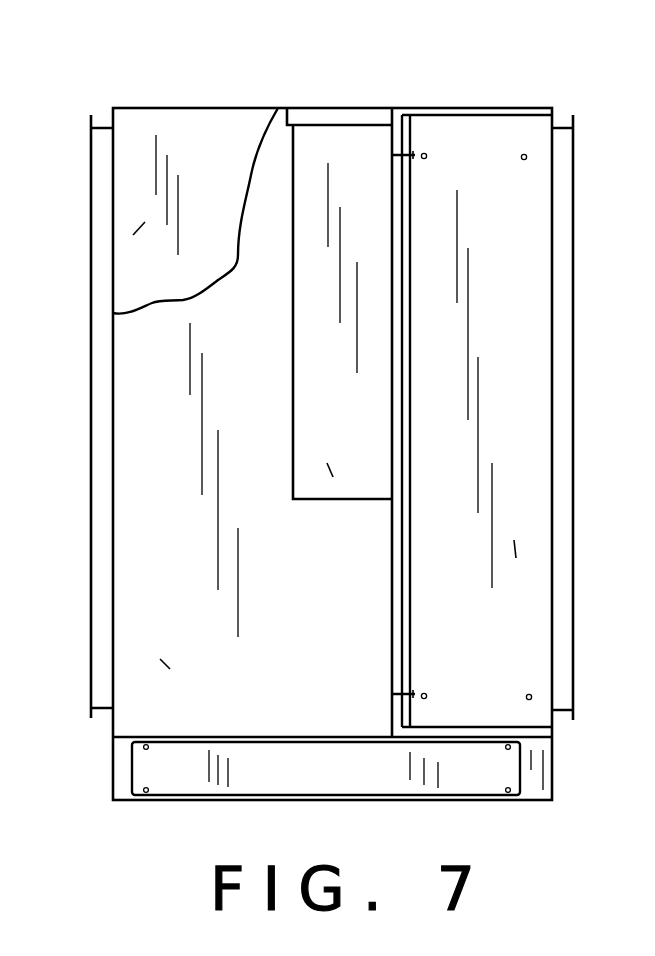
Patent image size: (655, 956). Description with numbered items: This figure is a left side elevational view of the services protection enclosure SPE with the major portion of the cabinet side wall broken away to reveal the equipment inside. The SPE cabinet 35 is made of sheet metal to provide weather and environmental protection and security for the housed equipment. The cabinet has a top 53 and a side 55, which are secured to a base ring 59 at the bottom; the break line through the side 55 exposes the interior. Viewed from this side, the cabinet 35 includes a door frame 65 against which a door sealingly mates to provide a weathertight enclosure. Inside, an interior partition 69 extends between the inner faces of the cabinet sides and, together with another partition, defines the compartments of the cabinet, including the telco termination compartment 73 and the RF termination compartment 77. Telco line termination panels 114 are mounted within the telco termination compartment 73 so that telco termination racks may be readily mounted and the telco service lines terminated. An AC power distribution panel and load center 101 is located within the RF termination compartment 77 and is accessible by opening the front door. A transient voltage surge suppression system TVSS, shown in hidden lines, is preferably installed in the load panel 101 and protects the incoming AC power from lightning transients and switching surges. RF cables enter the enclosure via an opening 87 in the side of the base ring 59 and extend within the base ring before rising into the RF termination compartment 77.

The SPE cabinet 35 is at (453, 100).
The top 53 is at (278, 108).
The side 55 is at (139, 230).
The base ring 59 is at (552, 770).
The door frame 65 is at (91, 458).
The interior partition 69 is at (392, 638).
The telco termination compartment 73 is at (512, 240).
The RF termination compartment 77 is at (146, 674).
The opening 87 is at (473, 772).
The AC power distribution panel and load center 101 is at (393, 430).
The telco line termination panel 114 is at (515, 548).
The services protection enclosure SPE is at (163, 96).
The transient voltage surge suppression system TVSS is at (300, 481).